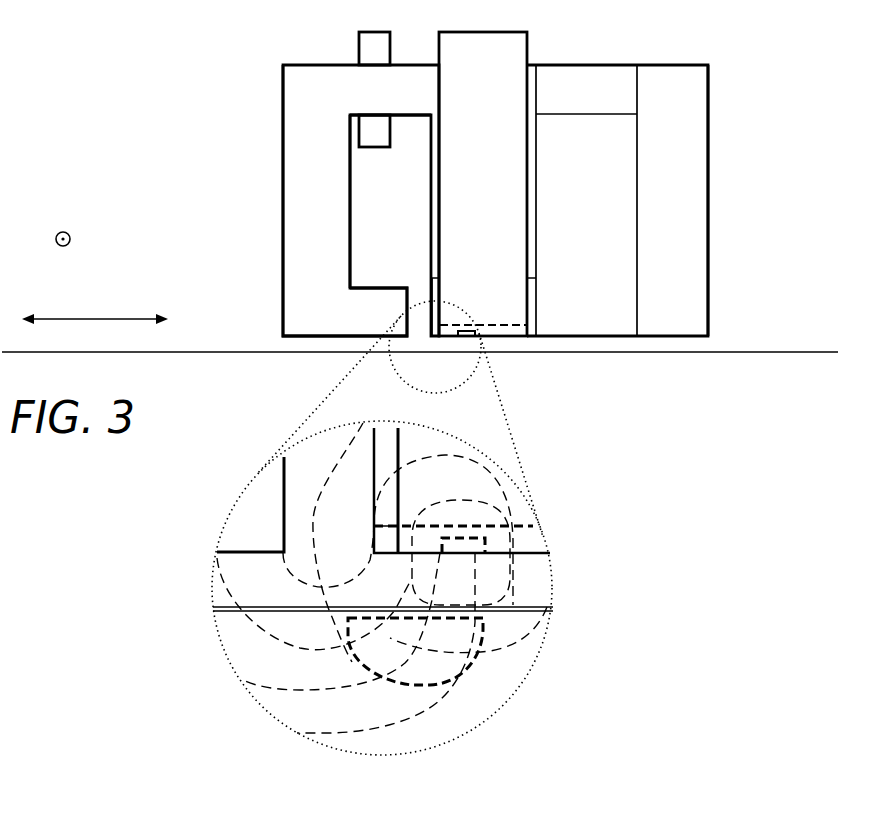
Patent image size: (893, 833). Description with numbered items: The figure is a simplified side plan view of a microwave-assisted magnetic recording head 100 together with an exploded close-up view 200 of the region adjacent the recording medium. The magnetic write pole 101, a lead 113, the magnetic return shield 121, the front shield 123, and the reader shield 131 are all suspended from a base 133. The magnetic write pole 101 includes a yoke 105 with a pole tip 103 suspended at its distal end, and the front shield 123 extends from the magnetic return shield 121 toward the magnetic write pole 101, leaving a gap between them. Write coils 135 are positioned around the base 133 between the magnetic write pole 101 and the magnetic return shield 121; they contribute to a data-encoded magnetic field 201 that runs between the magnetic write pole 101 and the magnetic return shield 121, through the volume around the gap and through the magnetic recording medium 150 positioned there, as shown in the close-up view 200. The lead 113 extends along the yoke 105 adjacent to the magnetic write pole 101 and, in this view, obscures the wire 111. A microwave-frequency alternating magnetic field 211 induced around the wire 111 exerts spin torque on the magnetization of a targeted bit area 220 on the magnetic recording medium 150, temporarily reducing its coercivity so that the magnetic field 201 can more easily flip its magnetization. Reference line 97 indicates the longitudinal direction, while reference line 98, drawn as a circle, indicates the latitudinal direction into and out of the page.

The magnetic recording head 100 is at (188, 60).
The write coils 135 is at (359, 125).
The base 133 is at (595, 64).
The reader shield 131 is at (708, 175).
The yoke 105 is at (537, 157).
The magnetic return shield 121 is at (364, 202).
The front shield 123 is at (365, 288).
The magnetic write pole 101 is at (550, 229).
The lead 113 is at (537, 290).
The pole tip 103 is at (537, 330).
The wire 111 is at (485, 545).
The reference line 98 is at (67, 223).
The reference line 97 is at (95, 307).
The magnetic recording medium 150 is at (768, 341).
The close-up view 200 is at (482, 386).
The targeted bit area 220 is at (482, 675).
The alternating magnetic field 211 is at (477, 711).
The data-encoded magnetic field 201 is at (426, 728).